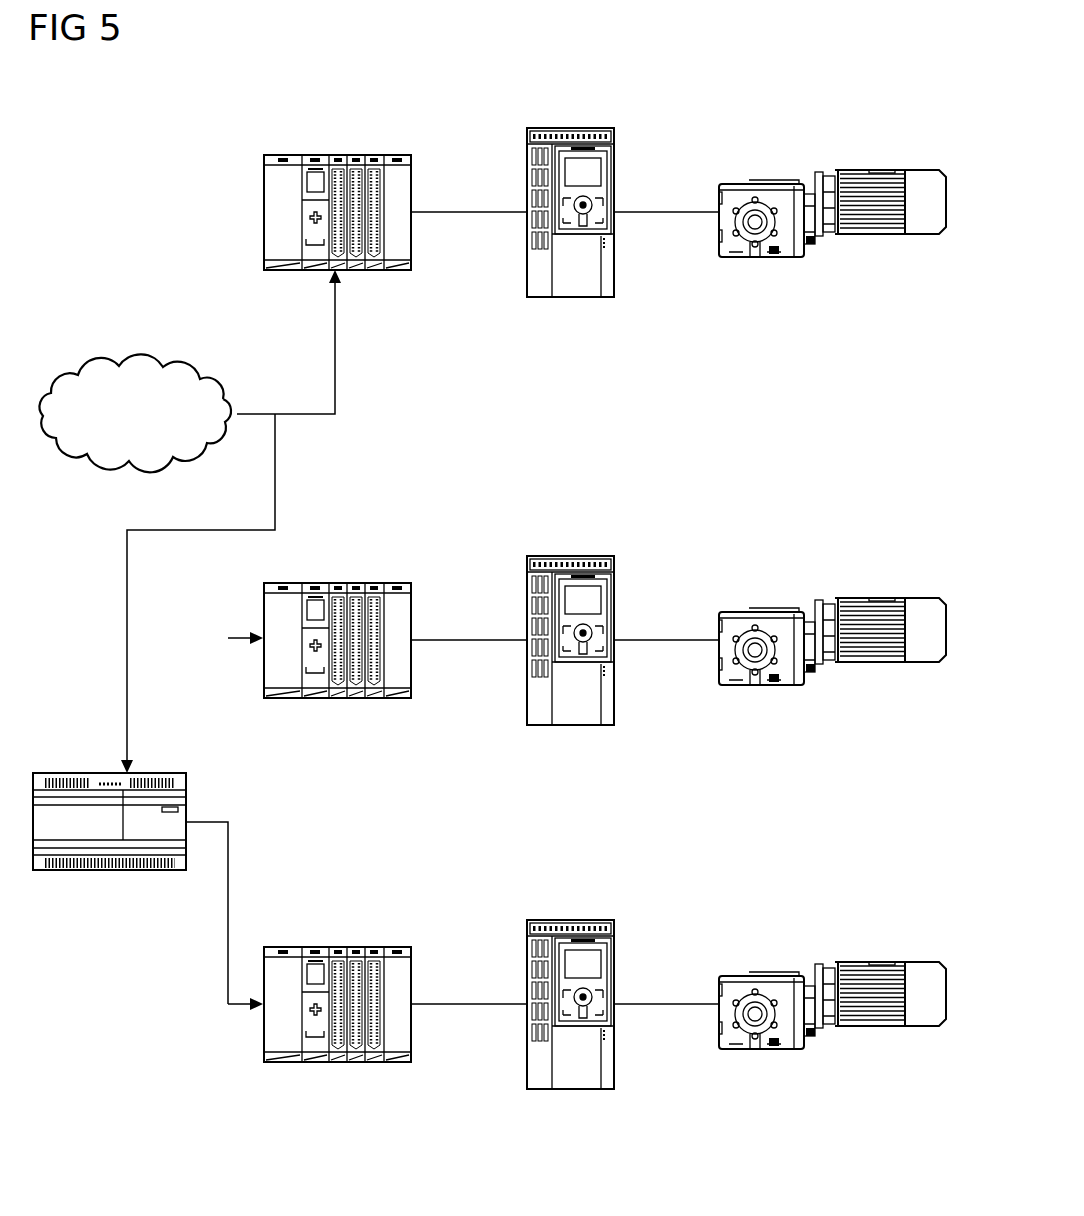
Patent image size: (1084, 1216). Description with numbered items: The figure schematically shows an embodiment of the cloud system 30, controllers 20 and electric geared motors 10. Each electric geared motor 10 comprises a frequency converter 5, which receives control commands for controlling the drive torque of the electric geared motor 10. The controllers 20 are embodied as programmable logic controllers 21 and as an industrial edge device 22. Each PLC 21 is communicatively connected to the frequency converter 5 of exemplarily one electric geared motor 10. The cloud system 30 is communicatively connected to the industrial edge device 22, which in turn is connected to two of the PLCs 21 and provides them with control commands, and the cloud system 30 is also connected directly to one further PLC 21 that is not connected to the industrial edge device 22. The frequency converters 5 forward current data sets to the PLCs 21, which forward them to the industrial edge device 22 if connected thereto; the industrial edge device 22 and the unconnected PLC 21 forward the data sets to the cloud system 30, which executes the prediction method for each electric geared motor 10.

The frequency converter 5 is at (572, 128).
The electric geared motor 10 is at (868, 104).
The controller 20 is at (90, 773).
The programmable logic controller 21 is at (335, 155).
The industrial edge device 22 is at (109, 793).
The cloud system 30 is at (130, 355).